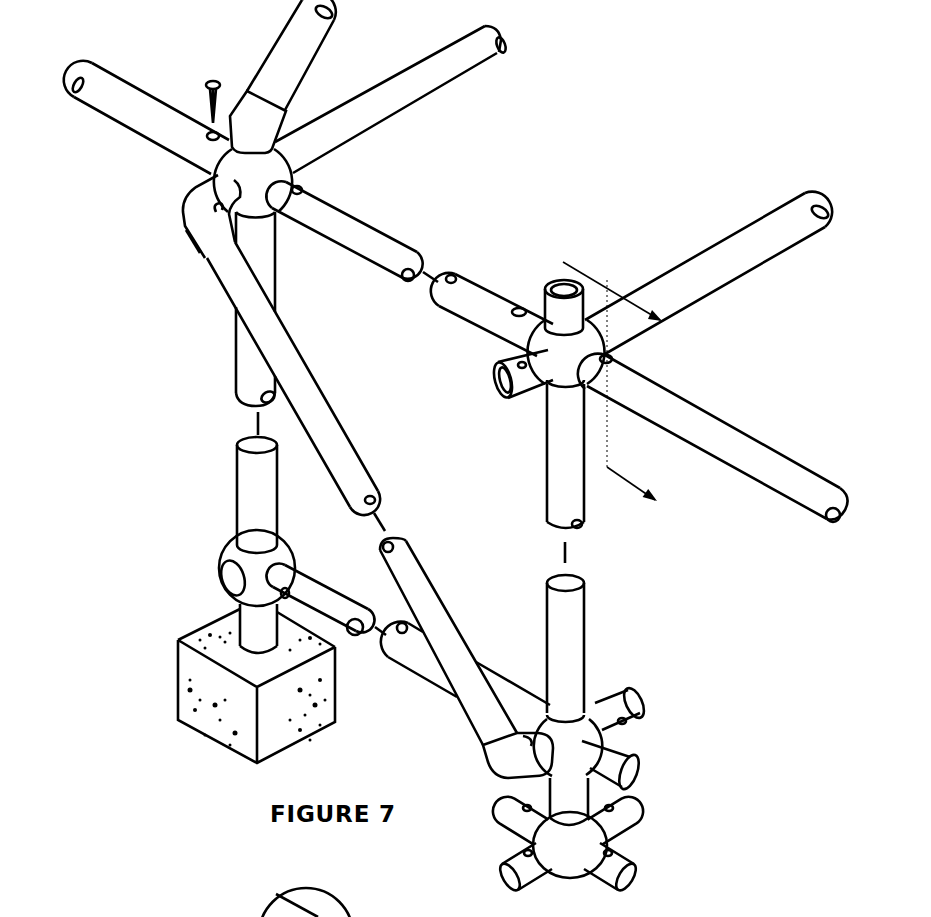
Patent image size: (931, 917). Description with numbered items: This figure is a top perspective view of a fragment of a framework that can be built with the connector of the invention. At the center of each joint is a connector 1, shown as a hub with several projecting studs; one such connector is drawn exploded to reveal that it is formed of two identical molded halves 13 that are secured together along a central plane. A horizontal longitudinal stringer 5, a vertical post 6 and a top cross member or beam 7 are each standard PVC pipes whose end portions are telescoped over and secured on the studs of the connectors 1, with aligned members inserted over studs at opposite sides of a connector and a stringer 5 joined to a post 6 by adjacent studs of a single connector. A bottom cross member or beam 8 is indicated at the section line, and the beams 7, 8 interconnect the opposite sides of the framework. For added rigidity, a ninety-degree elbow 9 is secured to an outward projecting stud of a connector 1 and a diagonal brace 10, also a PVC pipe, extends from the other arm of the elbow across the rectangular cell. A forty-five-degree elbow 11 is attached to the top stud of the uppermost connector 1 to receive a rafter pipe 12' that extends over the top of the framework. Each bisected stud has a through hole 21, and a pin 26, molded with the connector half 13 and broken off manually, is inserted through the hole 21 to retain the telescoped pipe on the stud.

The connector 1 is at (232, 551).
The horizontal longitudinal stringer 5 is at (723, 433).
The vertical post 6 is at (560, 455).
The top cross member or beam 7 is at (386, 108).
The bottom cross member or beam 8 is at (612, 377).
The 90° elbow 9 is at (198, 218).
The diagonal brace 10 is at (325, 425).
The 45° elbow 11 is at (256, 125).
The rafter pipe 12' is at (320, 55).
The connector half 13 is at (582, 841).
The through hole 21 is at (306, 188).
The pin 26 is at (208, 80).